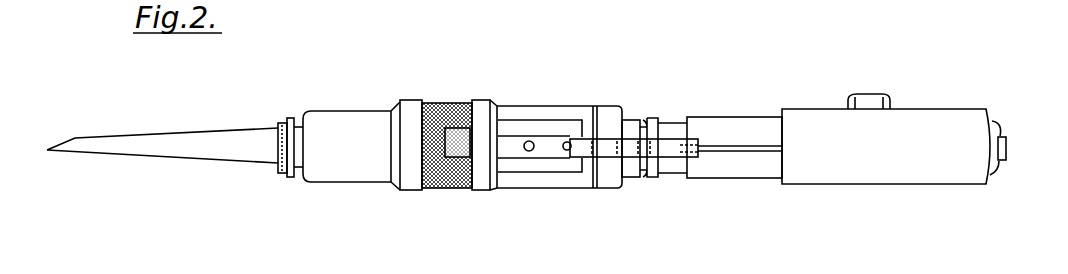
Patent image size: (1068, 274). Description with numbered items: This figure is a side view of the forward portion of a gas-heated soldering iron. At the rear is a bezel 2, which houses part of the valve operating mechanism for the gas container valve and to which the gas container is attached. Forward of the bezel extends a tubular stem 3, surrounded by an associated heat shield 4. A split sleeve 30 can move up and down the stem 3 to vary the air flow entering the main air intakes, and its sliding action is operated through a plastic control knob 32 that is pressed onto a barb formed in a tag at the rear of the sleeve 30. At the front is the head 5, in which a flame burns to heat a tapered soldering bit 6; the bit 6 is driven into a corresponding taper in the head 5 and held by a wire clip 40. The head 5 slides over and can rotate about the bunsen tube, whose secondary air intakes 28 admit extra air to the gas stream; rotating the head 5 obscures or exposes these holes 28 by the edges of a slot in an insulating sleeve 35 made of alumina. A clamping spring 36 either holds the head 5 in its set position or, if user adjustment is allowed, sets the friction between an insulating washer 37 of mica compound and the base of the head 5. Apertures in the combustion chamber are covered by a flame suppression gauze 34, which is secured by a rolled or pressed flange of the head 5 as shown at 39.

The bezel 2 is at (1008, 148).
The tubular stem portion 3 is at (1000, 126).
The heat shield 4 is at (898, 178).
The head 5 is at (387, 106).
The soldering bit 6 is at (175, 137).
The secondary air intakes 28 is at (565, 150).
The split sleeve 30 is at (739, 118).
The plastic control knob 32 is at (876, 94).
The flame suppression gauze 34 is at (450, 108).
The insulating sleeve 35 is at (523, 123).
The spring 36 is at (661, 139).
The insulating washer 37 is at (633, 120).
The gauze securing flange 39 is at (412, 190).
The wire clip 40 is at (284, 117).